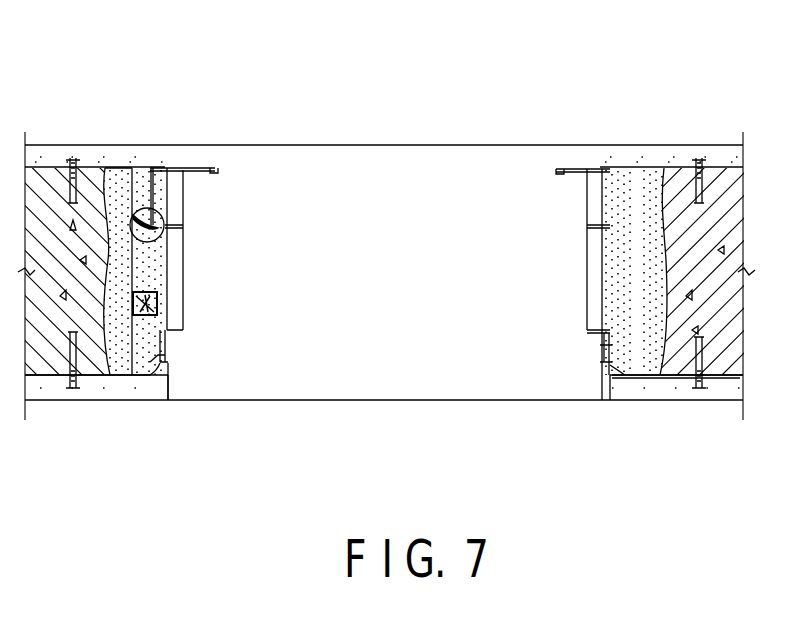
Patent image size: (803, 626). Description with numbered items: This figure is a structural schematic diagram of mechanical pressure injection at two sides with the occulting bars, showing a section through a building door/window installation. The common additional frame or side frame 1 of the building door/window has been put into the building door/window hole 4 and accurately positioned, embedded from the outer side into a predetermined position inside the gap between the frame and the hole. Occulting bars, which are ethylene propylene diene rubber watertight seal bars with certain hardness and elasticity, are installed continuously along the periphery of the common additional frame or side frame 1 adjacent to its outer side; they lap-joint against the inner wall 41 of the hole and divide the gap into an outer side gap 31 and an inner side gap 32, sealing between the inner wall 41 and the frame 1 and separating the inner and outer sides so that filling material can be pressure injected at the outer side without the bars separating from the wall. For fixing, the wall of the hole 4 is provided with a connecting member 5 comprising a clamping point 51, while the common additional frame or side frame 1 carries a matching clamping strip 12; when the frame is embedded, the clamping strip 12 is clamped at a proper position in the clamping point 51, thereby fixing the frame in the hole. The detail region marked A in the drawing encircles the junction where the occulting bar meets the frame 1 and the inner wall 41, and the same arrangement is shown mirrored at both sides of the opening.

The building door/window hole 4 is at (122, 182).
The outer side gap 31 is at (150, 178).
The common additional frame or side frame 1 is at (182, 200).
The detail area A is at (160, 225).
The inner side gap 32 is at (138, 372).
The inner wall of the hole 41 is at (135, 372).
The clamping strip 12 is at (611, 275).
The clamping point 51 is at (609, 362).
The connecting member 5 is at (632, 375).